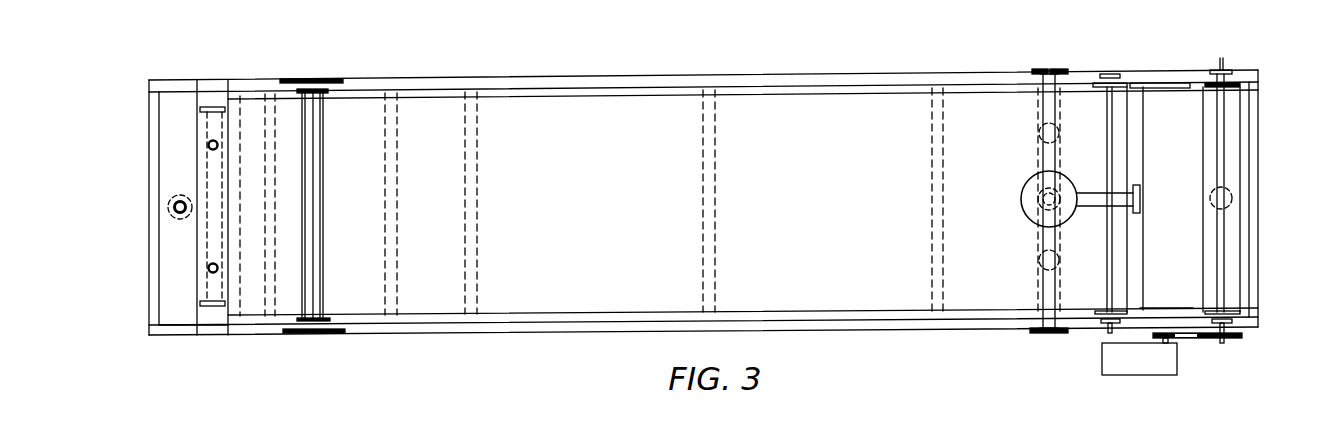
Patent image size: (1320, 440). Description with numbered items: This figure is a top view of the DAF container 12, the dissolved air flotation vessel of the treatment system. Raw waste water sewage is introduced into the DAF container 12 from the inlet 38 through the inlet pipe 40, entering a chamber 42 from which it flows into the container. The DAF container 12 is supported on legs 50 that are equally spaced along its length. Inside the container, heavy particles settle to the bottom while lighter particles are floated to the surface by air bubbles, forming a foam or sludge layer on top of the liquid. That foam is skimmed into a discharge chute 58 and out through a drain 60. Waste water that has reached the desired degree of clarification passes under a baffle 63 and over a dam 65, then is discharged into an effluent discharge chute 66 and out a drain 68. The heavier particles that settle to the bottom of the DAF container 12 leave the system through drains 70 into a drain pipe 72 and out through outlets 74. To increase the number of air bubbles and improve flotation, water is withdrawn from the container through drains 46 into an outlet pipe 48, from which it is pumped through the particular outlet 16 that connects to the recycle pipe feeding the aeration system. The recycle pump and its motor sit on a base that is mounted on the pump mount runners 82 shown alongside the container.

The DAF container 12 is at (542, 345).
The outlet 16 is at (213, 104).
The inlet 38 is at (1050, 68).
The inlet pipe 40 is at (1043, 150).
The chamber 42 is at (1022, 203).
The drains 46 is at (208, 143).
The outlet pipe 48 is at (205, 298).
The legs 50 is at (240, 305).
The discharge chute 58 is at (1233, 138).
The drain 60 is at (1233, 208).
The baffle 63 is at (232, 113).
The dam 65 is at (200, 110).
The effluent discharge chute 66 is at (180, 248).
The drain 68 is at (172, 206).
The drains 70 is at (1040, 130).
The drain pipe 72 is at (1062, 100).
The outlets 74 is at (1033, 68).
The pump mount runners 82 is at (268, 312).